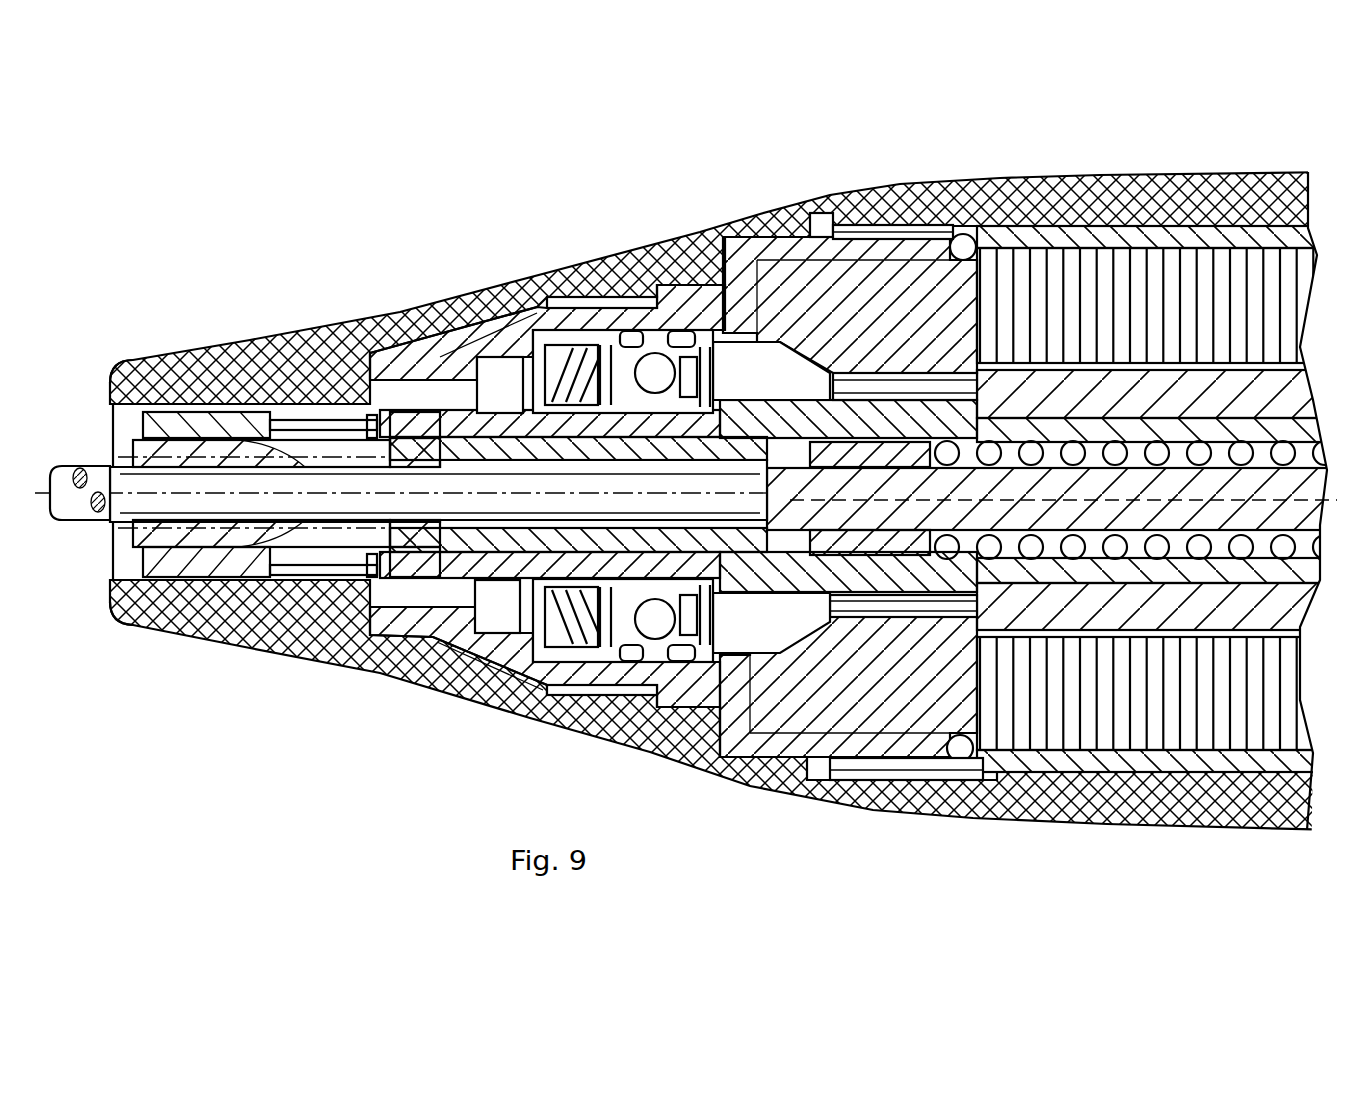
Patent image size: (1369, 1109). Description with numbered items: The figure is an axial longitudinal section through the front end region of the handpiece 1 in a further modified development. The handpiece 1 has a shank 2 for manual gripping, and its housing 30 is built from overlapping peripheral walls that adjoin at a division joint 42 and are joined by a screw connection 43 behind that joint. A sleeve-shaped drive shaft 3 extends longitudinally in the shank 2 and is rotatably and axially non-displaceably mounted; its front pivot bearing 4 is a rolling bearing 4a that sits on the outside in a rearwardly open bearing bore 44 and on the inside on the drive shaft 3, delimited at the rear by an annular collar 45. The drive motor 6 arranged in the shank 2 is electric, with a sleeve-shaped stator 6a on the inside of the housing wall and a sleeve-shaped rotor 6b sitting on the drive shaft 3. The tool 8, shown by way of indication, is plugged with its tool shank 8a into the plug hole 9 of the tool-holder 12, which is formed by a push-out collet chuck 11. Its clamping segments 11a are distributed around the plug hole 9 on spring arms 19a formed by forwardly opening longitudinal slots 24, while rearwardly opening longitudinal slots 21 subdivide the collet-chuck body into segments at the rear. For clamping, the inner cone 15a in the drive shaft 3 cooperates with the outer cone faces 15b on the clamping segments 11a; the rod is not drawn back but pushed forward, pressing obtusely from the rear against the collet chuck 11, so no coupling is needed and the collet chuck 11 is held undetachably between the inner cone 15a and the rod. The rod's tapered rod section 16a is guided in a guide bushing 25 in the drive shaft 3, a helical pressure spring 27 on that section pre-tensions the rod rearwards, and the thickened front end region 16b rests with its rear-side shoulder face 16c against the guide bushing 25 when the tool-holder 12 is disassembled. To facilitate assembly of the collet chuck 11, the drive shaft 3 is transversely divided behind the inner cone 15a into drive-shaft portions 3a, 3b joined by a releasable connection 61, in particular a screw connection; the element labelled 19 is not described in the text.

The handpiece 1 is at (752, 802).
The shank 2 is at (982, 829).
The drive shaft 3 is at (1040, 573).
The drive-shaft portion 3a is at (430, 423).
The drive-shaft portion 3b is at (250, 420).
The front pivot bearing 4 is at (602, 260).
The rolling bearing 4a is at (598, 296).
The drive motor 6 is at (1112, 222).
The stator 6a is at (1200, 262).
The rotor 6b is at (1290, 397).
The tool 8 is at (401, 473).
The tool shank 8a is at (117, 480).
The plug hole 9 is at (118, 530).
The collet chuck 11 is at (75, 485).
The tool-holder 12 is at (120, 436).
The clamping segments 11a is at (170, 395).
The inner cone 15a is at (193, 430).
The outer cone faces 15b is at (152, 578).
The rod section 16a is at (1317, 520).
The thickened front end region 16b is at (500, 447).
The rear-side shoulder face 16c is at (809, 455).
The support ring 19 is at (393, 440).
The spring arms 19a is at (262, 553).
The longitudinal slots 21 is at (305, 447).
The longitudinal slots 24 is at (205, 549).
The guide bushing 25 is at (882, 446).
The pressure spring 27 is at (1290, 457).
The housing 30 is at (692, 290).
The division joint 42 is at (826, 213).
The screw connection 43 is at (884, 236).
The bearing bore 44 is at (600, 665).
The annular collar 45 is at (770, 582).
The releasable connection 61 is at (335, 425).